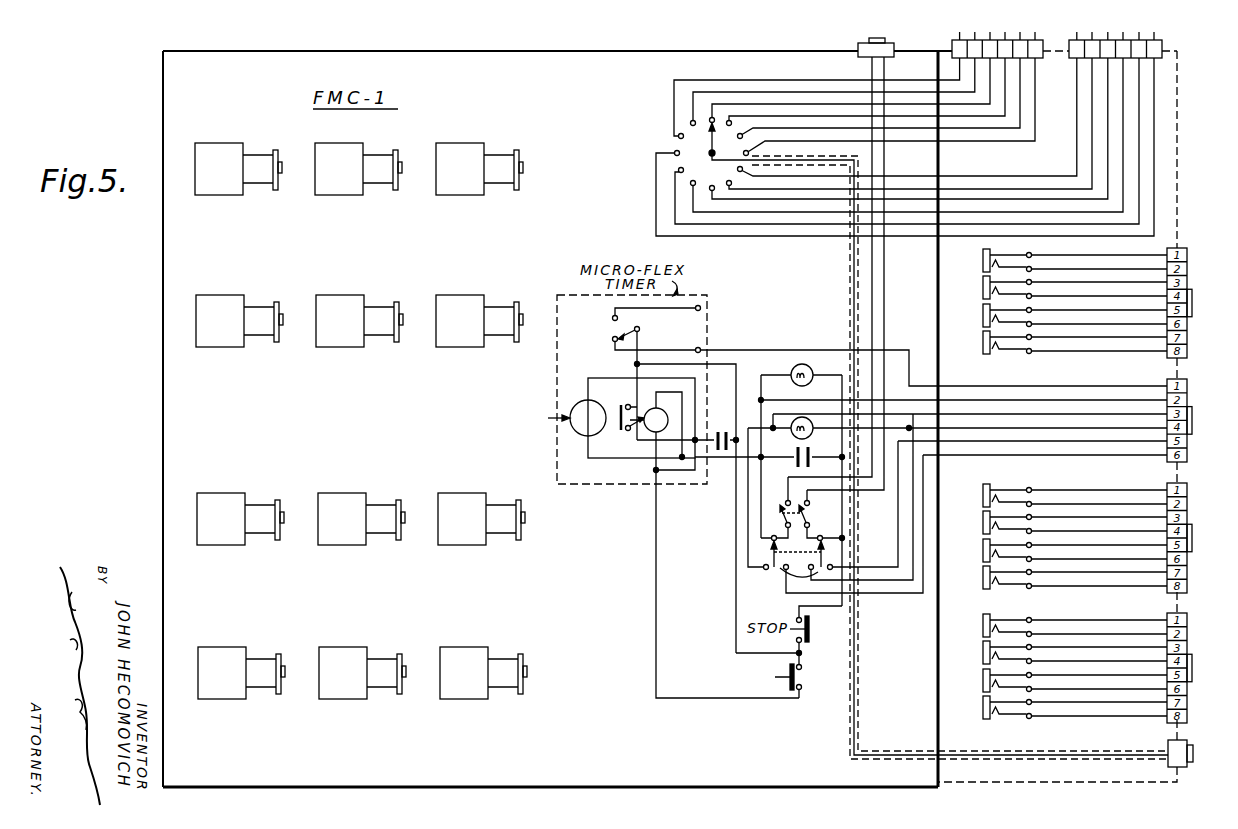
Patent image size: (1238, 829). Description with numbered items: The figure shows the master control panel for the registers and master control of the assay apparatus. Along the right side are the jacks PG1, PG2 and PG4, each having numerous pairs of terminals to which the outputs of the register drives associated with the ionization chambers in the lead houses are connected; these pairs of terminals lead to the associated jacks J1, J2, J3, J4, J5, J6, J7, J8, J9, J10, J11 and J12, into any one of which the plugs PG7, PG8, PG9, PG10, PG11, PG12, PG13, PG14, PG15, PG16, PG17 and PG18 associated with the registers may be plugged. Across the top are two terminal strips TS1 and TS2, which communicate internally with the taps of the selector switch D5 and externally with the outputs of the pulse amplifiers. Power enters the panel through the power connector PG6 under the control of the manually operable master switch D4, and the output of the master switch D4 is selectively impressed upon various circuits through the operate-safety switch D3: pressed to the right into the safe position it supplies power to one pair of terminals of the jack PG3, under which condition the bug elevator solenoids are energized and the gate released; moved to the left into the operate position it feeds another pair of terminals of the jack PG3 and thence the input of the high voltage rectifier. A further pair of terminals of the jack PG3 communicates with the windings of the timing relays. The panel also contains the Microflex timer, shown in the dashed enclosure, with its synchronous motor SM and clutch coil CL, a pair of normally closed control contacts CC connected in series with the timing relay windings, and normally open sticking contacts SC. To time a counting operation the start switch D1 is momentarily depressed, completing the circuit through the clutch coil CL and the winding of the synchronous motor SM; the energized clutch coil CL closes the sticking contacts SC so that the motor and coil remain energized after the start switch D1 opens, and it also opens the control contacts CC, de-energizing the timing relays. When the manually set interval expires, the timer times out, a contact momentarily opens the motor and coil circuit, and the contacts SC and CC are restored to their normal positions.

The plug PG18 is at (238, 181).
The plug PG14 is at (358, 181).
The plug PG10 is at (479, 181).
The plug PG17 is at (239, 332).
The plug PG13 is at (359, 332).
The plug PG9 is at (479, 332).
The plug PG16 is at (240, 531).
The plug PG12 is at (361, 531).
The plug PG8 is at (481, 531).
The plug PG15 is at (241, 685).
The plug PG11 is at (362, 685).
The plug PG7 is at (483, 685).
The power connector PG6 is at (841, 256).
The jack PG4 is at (1195, 303).
The jack PG3 is at (1195, 420).
The jack PG2 is at (1195, 538).
The jack PG1 is at (1195, 668).
The terminal strip TS1 is at (997, 37).
The terminal strip TS2 is at (1115, 37).
The selector switch D5 is at (698, 150).
The master switch D4 is at (803, 509).
The operate-safety switch D3 is at (780, 568).
The start switch D1 is at (774, 681).
The control contacts CC is at (613, 331).
The sticking contacts SC is at (632, 404).
The synchronous motor SM is at (473, 419).
The clutch coil CL is at (643, 431).
The jack J12 is at (1059, 260).
The jack J11 is at (1059, 287).
The jack J10 is at (1059, 315).
The jack J9 is at (1064, 342).
The jack J8 is at (1064, 495).
The jack J7 is at (1064, 522).
The jack J6 is at (1064, 550).
The jack J5 is at (1064, 577).
The jack J4 is at (1064, 625).
The jack J3 is at (1064, 652).
The jack J2 is at (1064, 680).
The jack J1 is at (1064, 707).